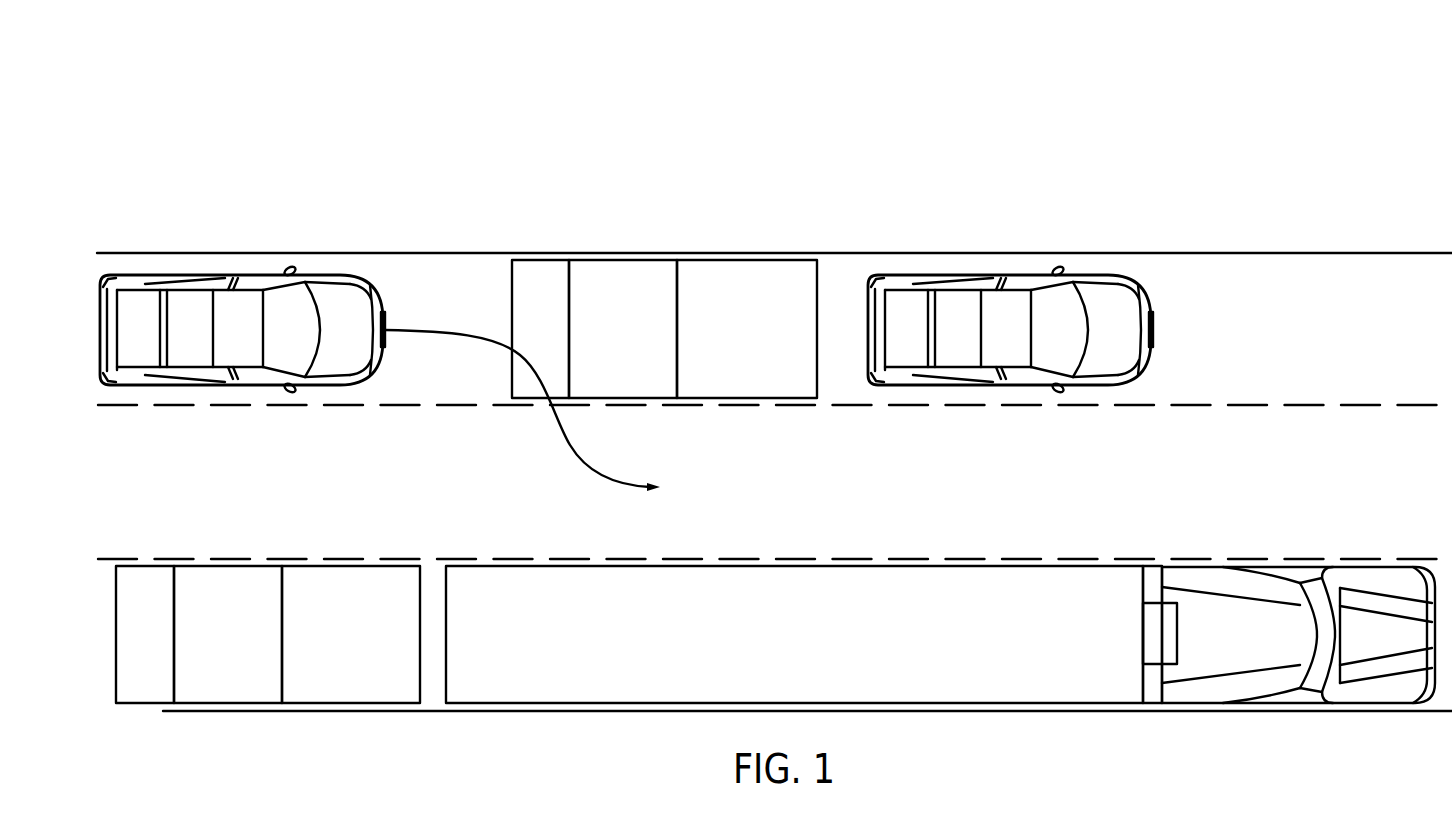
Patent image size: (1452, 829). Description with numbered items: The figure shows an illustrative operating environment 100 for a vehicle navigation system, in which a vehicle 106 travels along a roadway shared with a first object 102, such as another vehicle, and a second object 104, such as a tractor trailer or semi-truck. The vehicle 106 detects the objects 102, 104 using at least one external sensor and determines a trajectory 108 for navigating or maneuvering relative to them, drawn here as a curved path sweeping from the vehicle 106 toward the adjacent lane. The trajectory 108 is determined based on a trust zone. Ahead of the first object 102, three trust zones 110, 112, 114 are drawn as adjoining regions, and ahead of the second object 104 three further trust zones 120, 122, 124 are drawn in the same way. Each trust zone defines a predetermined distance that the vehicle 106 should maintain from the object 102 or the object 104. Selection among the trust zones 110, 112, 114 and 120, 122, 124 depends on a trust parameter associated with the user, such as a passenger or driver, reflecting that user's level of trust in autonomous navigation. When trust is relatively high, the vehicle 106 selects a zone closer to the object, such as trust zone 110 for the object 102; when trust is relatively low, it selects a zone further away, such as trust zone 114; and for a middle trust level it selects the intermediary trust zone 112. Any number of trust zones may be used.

The environment 100 is at (313, 180).
The first object 102 is at (994, 387).
The second object 104 is at (1378, 567).
The vehicle 106 is at (226, 387).
The trajectory 108 is at (565, 447).
The trust zone 110 is at (679, 280).
The trust zone 112 is at (571, 280).
The trust zone 114 is at (514, 280).
The trust zone 120 is at (284, 587).
The trust zone 122 is at (176, 587).
The trust zone 124 is at (118, 587).